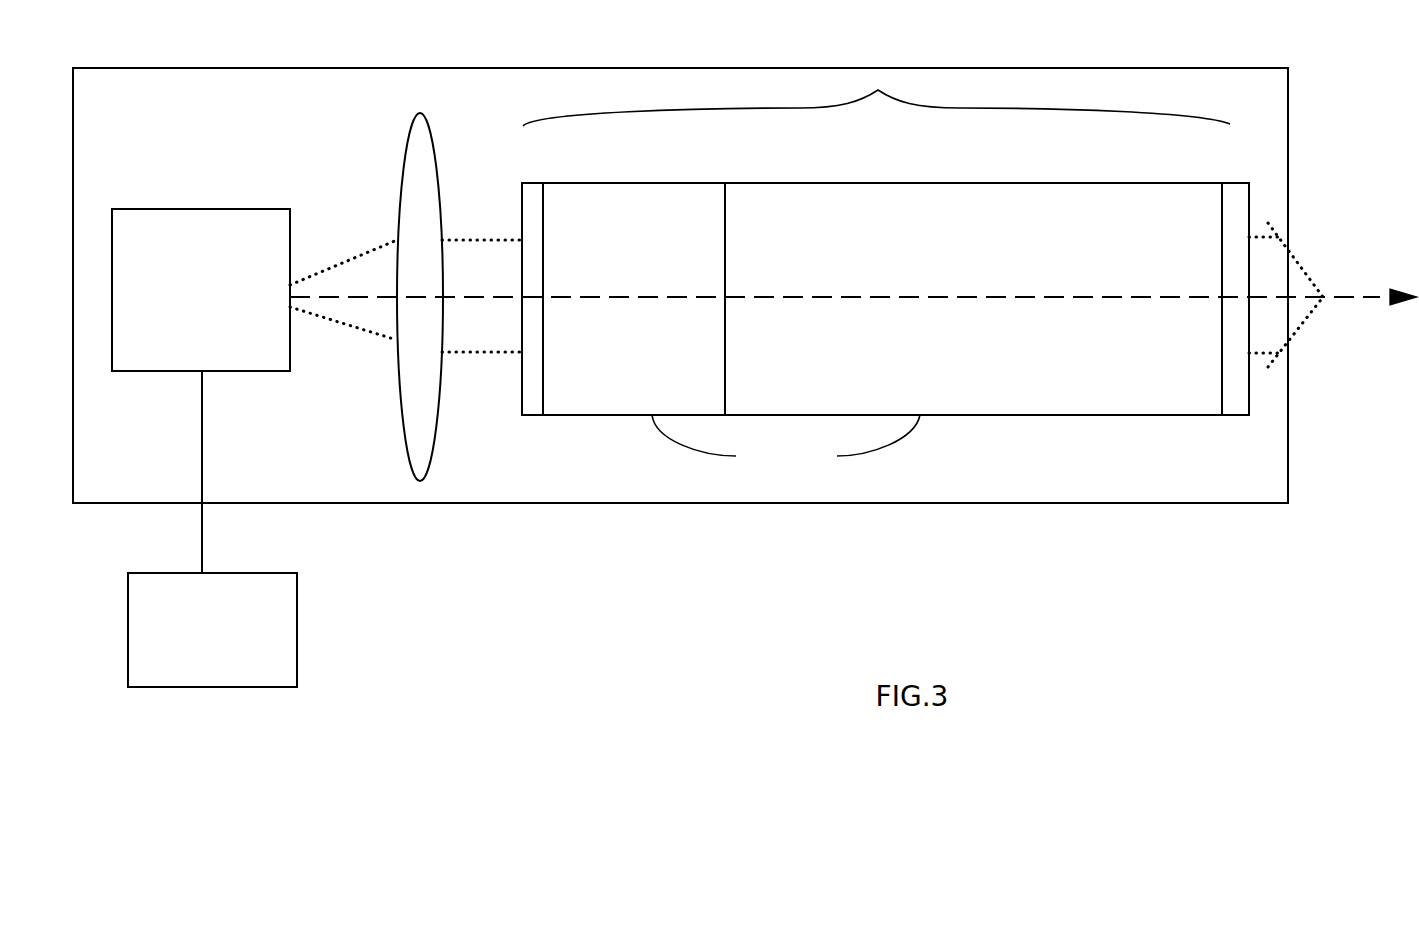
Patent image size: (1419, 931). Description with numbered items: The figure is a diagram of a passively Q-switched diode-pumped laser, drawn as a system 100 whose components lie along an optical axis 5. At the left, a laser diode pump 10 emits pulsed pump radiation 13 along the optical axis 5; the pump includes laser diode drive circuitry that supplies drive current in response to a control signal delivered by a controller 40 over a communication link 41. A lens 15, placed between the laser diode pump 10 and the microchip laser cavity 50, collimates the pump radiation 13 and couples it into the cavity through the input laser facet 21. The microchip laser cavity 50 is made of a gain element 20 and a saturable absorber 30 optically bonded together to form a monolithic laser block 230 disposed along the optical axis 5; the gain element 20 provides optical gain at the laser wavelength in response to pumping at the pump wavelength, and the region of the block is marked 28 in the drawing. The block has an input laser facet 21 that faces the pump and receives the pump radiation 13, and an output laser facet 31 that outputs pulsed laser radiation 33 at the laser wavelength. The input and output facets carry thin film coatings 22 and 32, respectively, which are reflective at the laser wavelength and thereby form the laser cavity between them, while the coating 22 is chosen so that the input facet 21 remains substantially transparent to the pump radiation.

The laser system housing 100 is at (1198, 509).
The laser diode pump 10 is at (138, 372).
The controller 40 is at (297, 628).
The communication link 41 is at (202, 527).
The lens 15 is at (437, 160).
The pulsed pump radiation 13 is at (347, 327).
The optical axis 5 is at (1373, 295).
The laser crystal 28 is at (885, 299).
The input laser facet 21 is at (519, 194).
The thin film coating 22 is at (527, 418).
The gain element 20 is at (680, 182).
The saturable absorber 30 is at (900, 183).
The thin film coating 32 is at (1235, 182).
The output laser facet 31 is at (1254, 197).
The pulsed laser radiation 33 is at (1300, 330).
The microchip laser cavity 50 is at (878, 90).
The monolithic laser block 230 is at (786, 448).